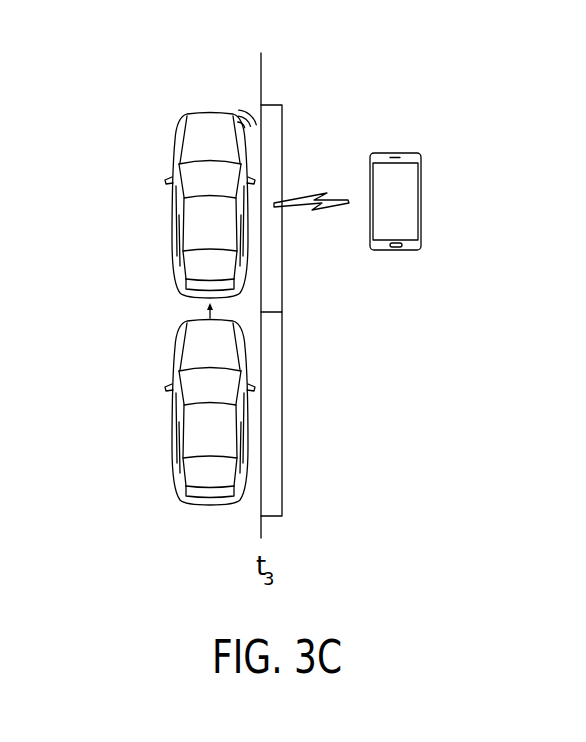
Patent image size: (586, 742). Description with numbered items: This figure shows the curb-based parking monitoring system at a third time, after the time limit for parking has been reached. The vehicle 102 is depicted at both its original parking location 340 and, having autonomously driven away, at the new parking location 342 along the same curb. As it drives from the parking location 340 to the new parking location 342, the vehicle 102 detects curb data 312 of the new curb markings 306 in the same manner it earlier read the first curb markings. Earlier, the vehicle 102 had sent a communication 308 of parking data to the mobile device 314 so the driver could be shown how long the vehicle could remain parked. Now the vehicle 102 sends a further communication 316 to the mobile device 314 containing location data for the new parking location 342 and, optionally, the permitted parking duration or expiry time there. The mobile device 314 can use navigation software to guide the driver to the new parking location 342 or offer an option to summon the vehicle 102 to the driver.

The vehicle 102 is at (156, 279).
The second curb marking 306 is at (275, 153).
The communication 308 is at (275, 412).
The curb data 312 is at (238, 78).
The mobile device 314 is at (422, 170).
The communication 316 is at (313, 212).
The parking location 340 is at (130, 415).
The new parking location 342 is at (130, 210).